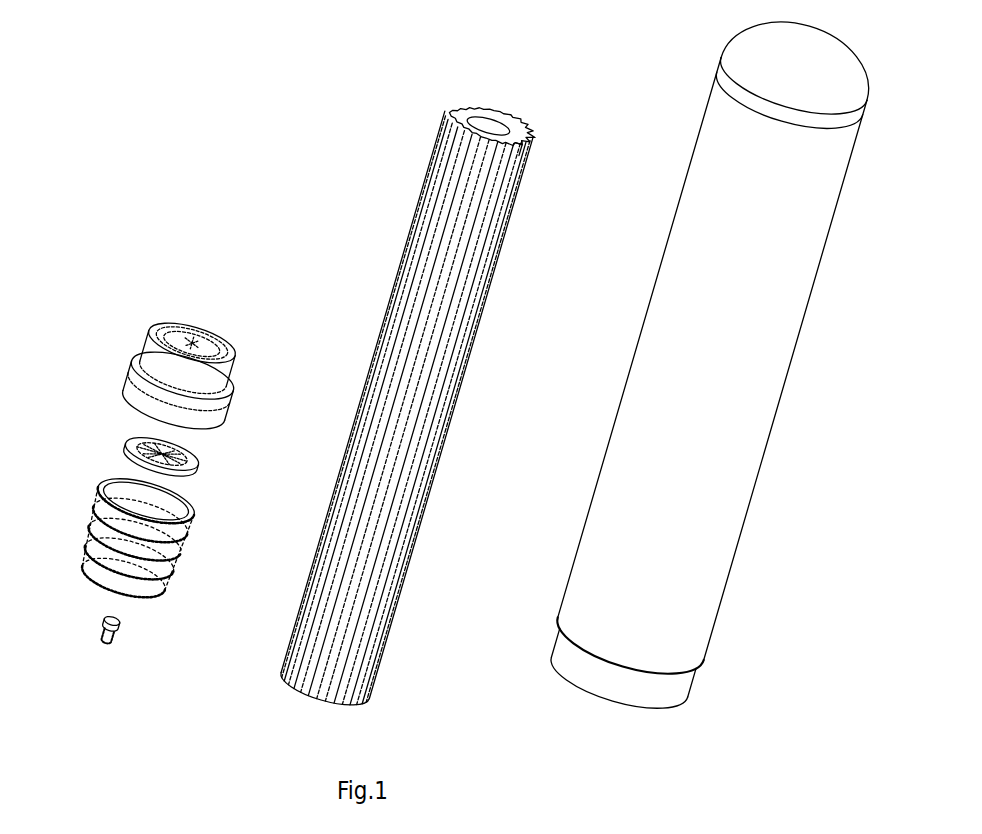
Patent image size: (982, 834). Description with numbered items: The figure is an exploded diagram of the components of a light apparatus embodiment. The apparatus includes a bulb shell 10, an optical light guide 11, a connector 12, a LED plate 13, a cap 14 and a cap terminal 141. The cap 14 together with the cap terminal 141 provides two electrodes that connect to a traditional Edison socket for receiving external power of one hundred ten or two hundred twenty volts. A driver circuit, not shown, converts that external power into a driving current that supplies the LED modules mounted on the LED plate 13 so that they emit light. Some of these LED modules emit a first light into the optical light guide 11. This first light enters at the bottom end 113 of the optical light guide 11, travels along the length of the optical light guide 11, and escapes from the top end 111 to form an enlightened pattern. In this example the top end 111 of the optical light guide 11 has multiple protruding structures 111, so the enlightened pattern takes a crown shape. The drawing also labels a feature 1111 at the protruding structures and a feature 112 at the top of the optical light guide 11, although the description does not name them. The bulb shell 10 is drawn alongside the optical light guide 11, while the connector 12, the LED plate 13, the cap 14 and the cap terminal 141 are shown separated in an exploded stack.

The bulb shell 10 is at (777, 348).
The optical light guide 11 is at (423, 406).
The top end 111 is at (497, 117).
The rib end face 1111 is at (523, 128).
The central channel 112 is at (482, 130).
The bottom end 113 is at (342, 702).
The connector 12 is at (158, 328).
The LED plate 13 is at (127, 453).
The cap 14 is at (95, 517).
The cap terminal 141 is at (94, 633).